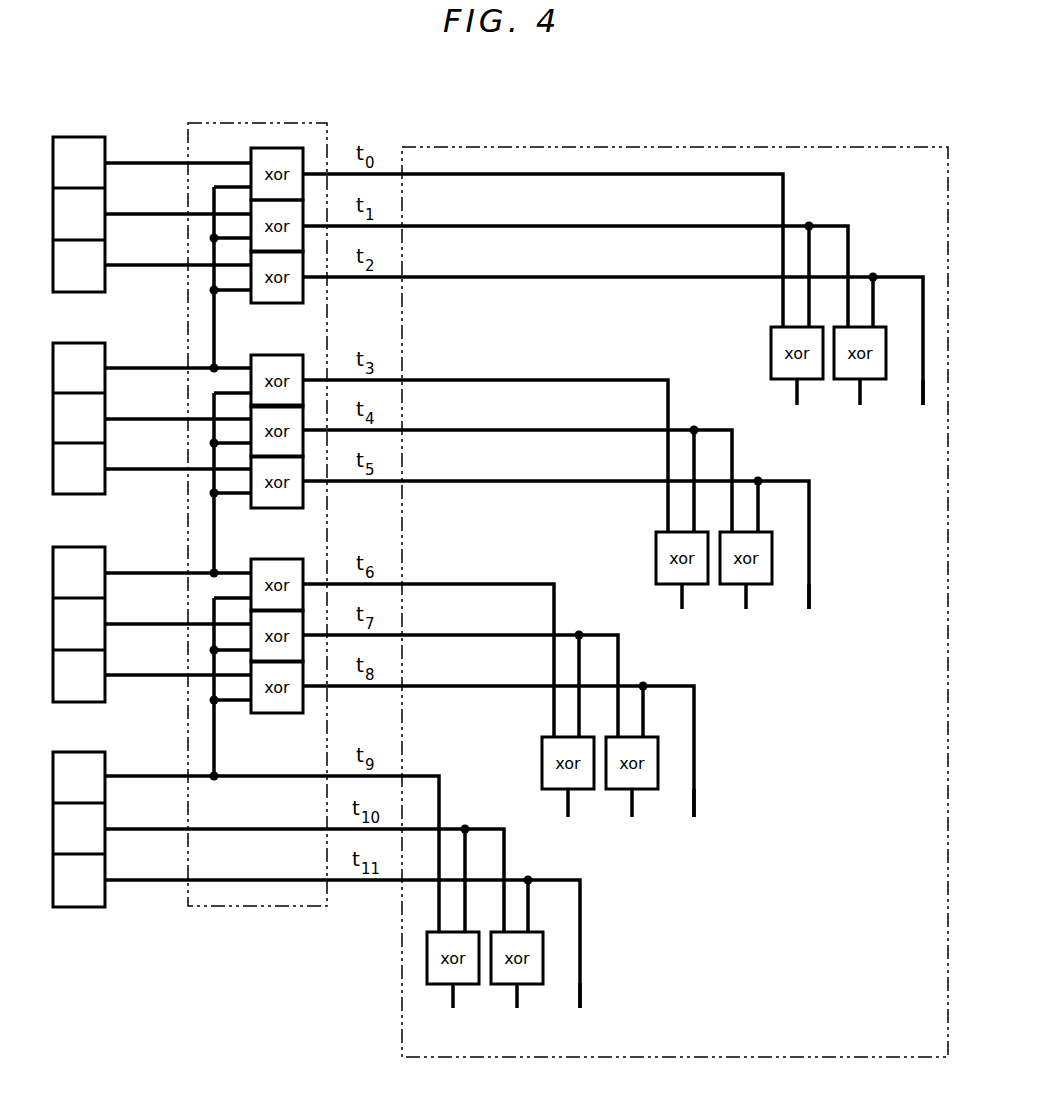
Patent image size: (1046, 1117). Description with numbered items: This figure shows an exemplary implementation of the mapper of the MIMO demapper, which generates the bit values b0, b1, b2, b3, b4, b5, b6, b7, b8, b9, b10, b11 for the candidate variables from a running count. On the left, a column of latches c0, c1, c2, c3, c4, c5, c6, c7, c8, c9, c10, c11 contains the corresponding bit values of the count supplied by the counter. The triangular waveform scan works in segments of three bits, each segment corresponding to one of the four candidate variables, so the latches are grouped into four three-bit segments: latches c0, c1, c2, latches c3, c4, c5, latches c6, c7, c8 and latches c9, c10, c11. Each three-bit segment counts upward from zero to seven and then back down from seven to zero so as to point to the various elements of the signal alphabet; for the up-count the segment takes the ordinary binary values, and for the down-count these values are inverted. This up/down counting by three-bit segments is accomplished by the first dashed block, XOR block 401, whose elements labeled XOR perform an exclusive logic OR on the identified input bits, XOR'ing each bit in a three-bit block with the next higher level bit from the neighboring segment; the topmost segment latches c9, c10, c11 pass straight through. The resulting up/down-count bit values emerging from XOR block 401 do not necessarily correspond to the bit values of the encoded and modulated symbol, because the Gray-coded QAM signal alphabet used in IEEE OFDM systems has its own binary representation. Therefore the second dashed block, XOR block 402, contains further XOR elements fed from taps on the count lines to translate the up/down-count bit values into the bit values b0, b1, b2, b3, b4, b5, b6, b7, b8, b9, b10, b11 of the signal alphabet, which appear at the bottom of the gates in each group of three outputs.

The XOR block 401 is at (248, 123).
The XOR block 402 is at (671, 147).
The latch c0 is at (159, 159).
The latch c1 is at (159, 210).
The latch c2 is at (159, 262).
The latch c3 is at (159, 365).
The latch c4 is at (159, 415).
The latch c5 is at (159, 465).
The latch c6 is at (159, 569).
The latch c7 is at (159, 620).
The latch c8 is at (159, 672).
The latch c9 is at (253, 845).
The latch c10 is at (284, 870).
The latch c11 is at (322, 934).
The bit value b0 is at (923, 413).
The bit value b1 is at (861, 413).
The bit value b2 is at (798, 413).
The bit value b3 is at (808, 618).
The bit value b4 is at (746, 618).
The bit value b5 is at (683, 618).
The bit value b6 is at (694, 824).
The bit value b7 is at (631, 824).
The bit value b8 is at (568, 824).
The bit value b9 is at (580, 1017).
The bit value b10 is at (518, 1017).
The bit value b11 is at (455, 1017).